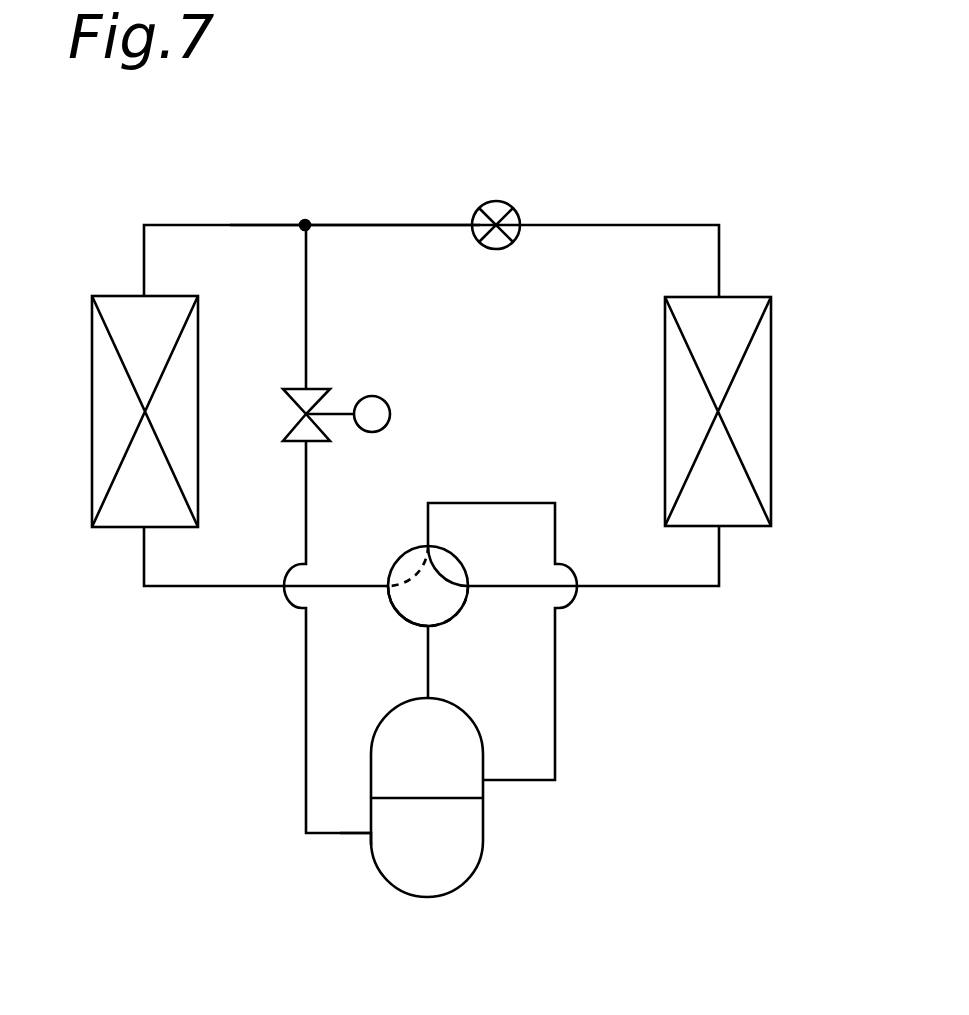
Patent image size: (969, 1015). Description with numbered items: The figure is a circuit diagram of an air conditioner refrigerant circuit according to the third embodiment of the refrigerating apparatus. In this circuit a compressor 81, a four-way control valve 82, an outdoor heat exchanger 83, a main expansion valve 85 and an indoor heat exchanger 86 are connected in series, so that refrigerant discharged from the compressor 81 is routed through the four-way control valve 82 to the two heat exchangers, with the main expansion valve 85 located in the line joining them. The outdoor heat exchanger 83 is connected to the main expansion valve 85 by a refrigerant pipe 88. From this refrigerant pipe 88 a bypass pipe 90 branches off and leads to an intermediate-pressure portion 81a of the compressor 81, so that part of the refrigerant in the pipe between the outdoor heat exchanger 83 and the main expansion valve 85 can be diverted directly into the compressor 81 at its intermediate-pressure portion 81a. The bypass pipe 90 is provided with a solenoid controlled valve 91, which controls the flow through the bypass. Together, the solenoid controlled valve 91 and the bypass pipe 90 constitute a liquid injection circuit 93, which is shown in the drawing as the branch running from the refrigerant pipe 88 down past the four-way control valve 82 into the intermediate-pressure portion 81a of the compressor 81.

The refrigerant pipe 88 is at (351, 224).
The main expansion valve 85 is at (496, 200).
The outdoor heat exchanger 83 is at (92, 405).
The indoor heat exchanger 86 is at (772, 356).
The bypass pipe 90 is at (307, 352).
The solenoid controlled valve 91 is at (390, 413).
The liquid injection circuit 93 is at (292, 664).
The four-way control valve 82 is at (462, 610).
The compressor 81 is at (428, 898).
The intermediate-pressure portion 81a is at (370, 834).